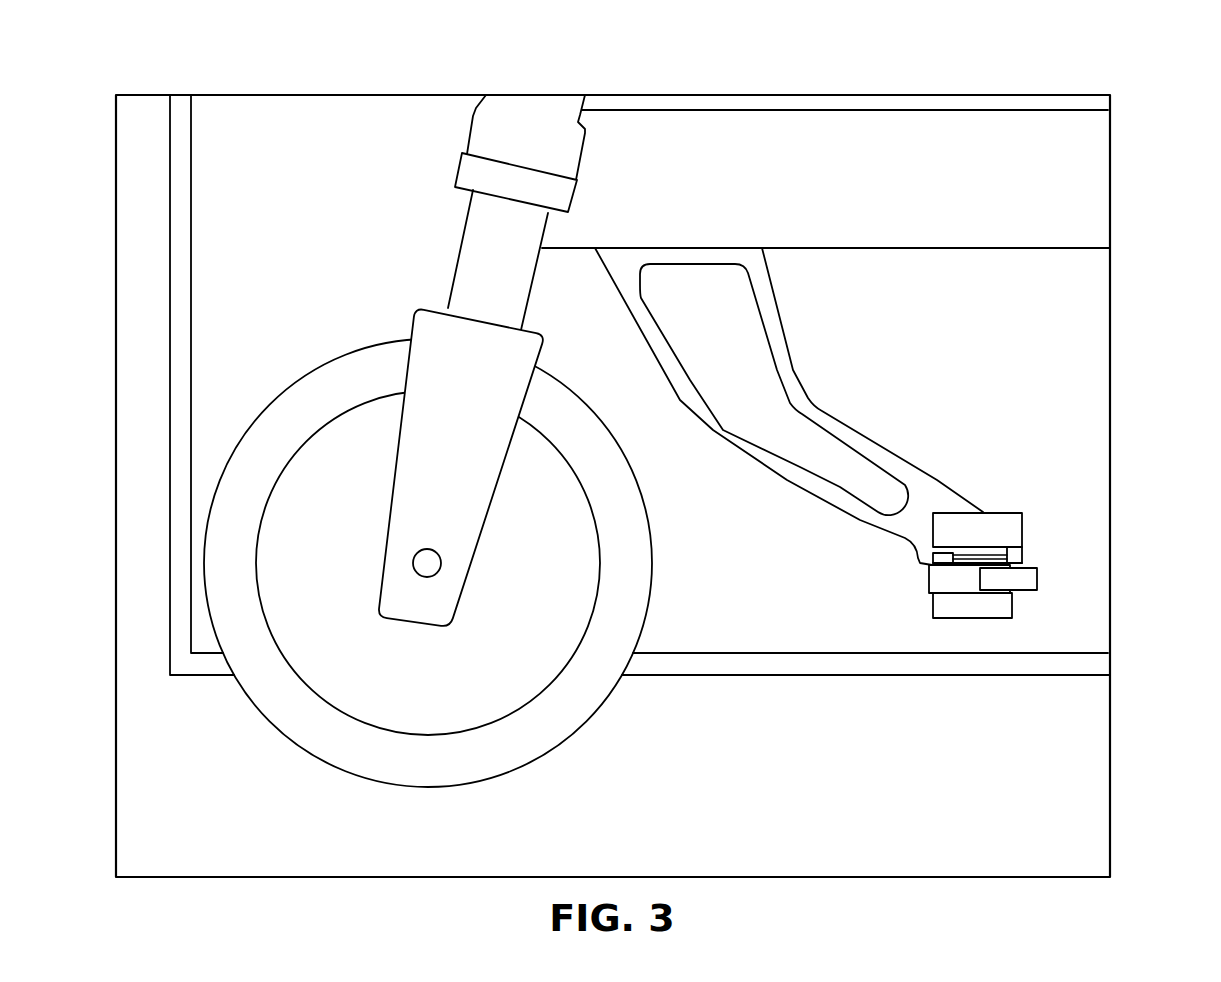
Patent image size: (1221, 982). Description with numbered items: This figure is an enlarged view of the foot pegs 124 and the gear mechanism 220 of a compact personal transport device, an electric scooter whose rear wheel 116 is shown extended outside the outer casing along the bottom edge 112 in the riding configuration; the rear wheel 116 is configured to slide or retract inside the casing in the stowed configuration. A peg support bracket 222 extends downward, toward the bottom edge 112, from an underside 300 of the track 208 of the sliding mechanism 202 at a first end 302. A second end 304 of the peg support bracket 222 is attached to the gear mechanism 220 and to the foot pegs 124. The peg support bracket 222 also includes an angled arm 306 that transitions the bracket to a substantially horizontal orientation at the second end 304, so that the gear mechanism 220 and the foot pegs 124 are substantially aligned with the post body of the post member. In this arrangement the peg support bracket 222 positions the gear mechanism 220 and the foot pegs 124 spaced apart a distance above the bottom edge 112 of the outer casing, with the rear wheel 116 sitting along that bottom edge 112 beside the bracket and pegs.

The bottom edge 112 is at (922, 677).
The rear wheel 116 is at (425, 789).
The foot pegs 124 is at (1023, 580).
The sliding mechanism 202 is at (807, 143).
The track 208 is at (918, 197).
The gear mechanism 220 is at (1060, 533).
The peg support bracket 222 is at (810, 397).
The underside 300 is at (1002, 249).
The first end 302 is at (767, 253).
The second end 304 is at (1013, 513).
The angled arm 306 is at (857, 442).